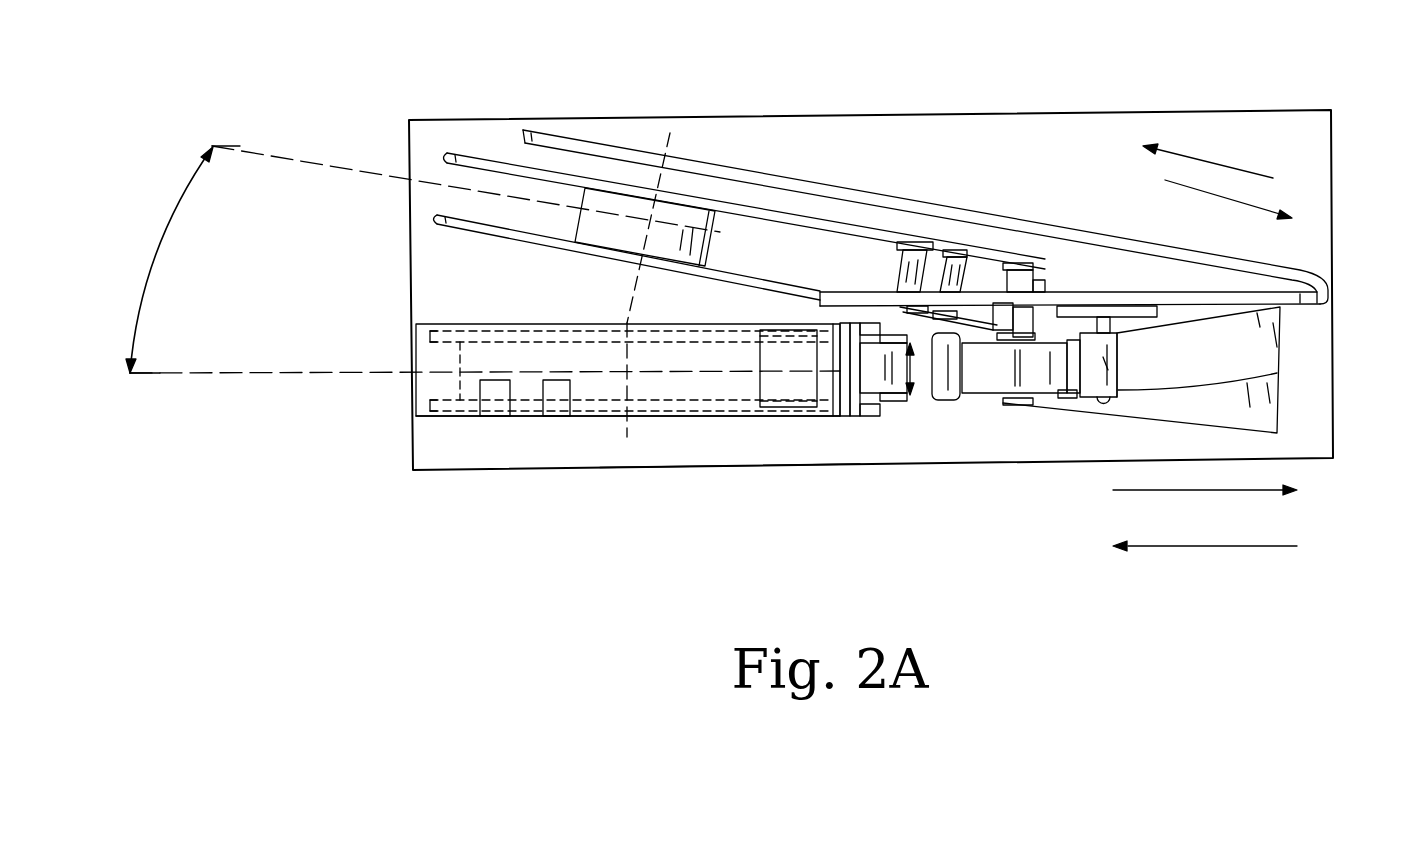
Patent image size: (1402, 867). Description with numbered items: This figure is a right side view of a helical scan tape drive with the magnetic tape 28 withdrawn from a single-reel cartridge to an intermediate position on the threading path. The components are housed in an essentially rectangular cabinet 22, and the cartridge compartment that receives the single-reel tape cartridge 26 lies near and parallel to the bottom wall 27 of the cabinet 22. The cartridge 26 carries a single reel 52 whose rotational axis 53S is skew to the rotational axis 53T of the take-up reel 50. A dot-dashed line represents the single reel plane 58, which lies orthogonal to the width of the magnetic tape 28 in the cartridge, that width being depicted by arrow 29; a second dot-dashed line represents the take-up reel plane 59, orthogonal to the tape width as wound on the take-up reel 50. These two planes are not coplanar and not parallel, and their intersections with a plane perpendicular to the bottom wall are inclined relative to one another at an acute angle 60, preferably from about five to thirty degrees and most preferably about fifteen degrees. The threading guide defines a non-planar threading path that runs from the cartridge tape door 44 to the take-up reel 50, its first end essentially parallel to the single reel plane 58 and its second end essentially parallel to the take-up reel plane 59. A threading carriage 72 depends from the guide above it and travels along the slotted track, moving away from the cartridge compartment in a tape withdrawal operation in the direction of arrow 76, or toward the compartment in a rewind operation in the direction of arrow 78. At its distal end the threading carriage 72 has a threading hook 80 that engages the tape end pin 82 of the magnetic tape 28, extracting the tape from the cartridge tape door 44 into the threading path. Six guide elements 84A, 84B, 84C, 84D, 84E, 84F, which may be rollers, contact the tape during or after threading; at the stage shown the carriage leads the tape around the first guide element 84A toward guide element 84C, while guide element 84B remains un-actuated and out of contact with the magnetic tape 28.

The cabinet 22 is at (456, 472).
The single-reel tape cartridge 26 is at (643, 418).
The bottom wall 27 is at (720, 470).
The magnetic tape 28 is at (977, 373).
The arrow 29 is at (927, 372).
The cartridge tape door 44 is at (797, 400).
The take-up reel 50 is at (467, 157).
The single reel 52 is at (420, 336).
The rotational axis of reel 53S is at (627, 436).
The rotational axis of take-up reel 53T is at (635, 272).
The single reel plane 58 is at (333, 378).
The take-up reel plane 59 is at (327, 165).
The acute angle 60 is at (155, 248).
The threading carriage 72 is at (1160, 307).
The arrow 76 is at (1208, 152).
The arrow 78 is at (1265, 200).
The threading hook 80 is at (1107, 366).
The tape end pin 82 is at (1077, 400).
The guide element 84A is at (897, 398).
The guide element 84B is at (947, 400).
The guide element 84C is at (1030, 400).
The guide element 84D is at (1030, 266).
The guide element 84E is at (967, 247).
The guide element 84F is at (900, 243).